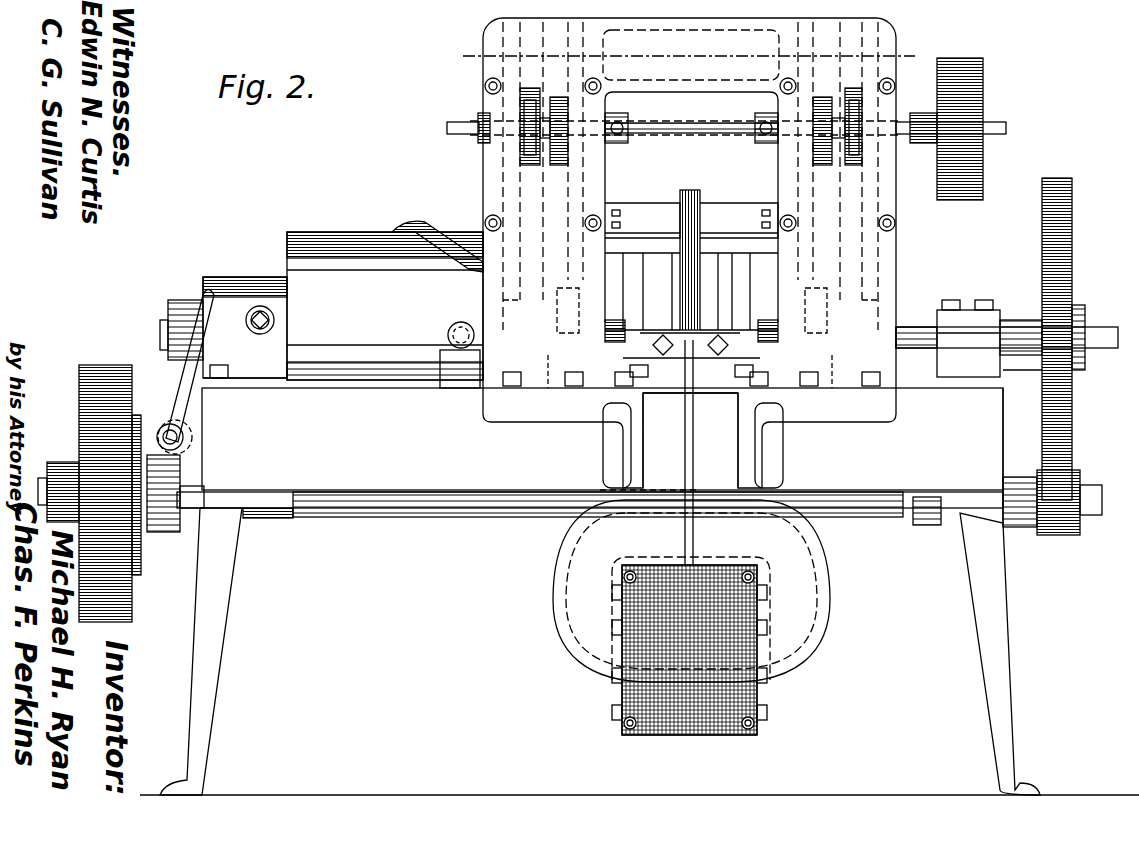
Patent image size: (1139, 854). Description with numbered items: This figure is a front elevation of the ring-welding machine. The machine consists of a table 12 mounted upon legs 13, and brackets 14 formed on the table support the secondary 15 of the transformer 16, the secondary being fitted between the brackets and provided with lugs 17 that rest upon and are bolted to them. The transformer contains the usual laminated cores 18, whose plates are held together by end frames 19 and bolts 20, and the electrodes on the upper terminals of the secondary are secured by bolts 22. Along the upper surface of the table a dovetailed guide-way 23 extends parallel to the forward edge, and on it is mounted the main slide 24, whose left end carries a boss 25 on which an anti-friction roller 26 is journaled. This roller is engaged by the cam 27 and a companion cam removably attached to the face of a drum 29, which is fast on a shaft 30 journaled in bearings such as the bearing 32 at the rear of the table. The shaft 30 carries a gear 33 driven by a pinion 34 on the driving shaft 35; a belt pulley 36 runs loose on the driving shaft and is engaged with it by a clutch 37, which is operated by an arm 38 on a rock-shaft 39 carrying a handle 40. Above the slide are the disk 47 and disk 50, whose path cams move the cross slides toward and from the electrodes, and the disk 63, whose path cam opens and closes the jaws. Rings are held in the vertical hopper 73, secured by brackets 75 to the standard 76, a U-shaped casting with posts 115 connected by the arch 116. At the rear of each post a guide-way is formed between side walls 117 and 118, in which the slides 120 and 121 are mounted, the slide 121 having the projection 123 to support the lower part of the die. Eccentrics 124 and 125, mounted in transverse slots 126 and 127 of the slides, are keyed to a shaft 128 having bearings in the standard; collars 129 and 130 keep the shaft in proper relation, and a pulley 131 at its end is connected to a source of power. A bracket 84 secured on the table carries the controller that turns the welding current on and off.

The table 12 is at (906, 476).
The legs 13 is at (480, 56).
The brackets 14 is at (608, 412).
The secondary 15 is at (690, 440).
The transformer 16 is at (707, 659).
The lugs 17 is at (627, 384).
The laminated cores 18 is at (700, 732).
The end frames 19 is at (620, 686).
The bolts 20 is at (612, 630).
The bolts 22 is at (663, 352).
The dovetailed guide-way 23 is at (362, 400).
The main slide 24 is at (460, 372).
The boss 25 is at (446, 346).
The anti-friction roller 26 is at (457, 328).
The cam 27 is at (410, 224).
The drum 29 is at (335, 246).
The shaft 30 is at (912, 326).
The bearing 32 is at (970, 322).
The gear 33 is at (1064, 282).
The pinion 34 is at (1060, 530).
The driving shaft 35 is at (439, 522).
The belt pulley 36 is at (131, 608).
The clutch 37 is at (165, 527).
The arm 38 is at (178, 520).
The rock-shaft 39 is at (167, 428).
The handle 40 is at (201, 295).
The disk 47 is at (634, 300).
The disk 50 is at (762, 292).
The disk 63 is at (716, 345).
The vertical hopper 73 is at (690, 196).
The brackets 75 is at (730, 214).
The standard 76 is at (532, 400).
The bracket 84 is at (248, 290).
The posts 115 is at (726, 183).
The arch 116 is at (688, 30).
The side wall 117 is at (488, 42).
The side wall 118 is at (598, 32).
The slide 120 is at (556, 36).
The slide 121 is at (528, 36).
The projection 123 is at (550, 396).
The eccentric 124 is at (526, 130).
The eccentric 125 is at (568, 136).
The transverse slot 126 is at (522, 150).
The transverse slot 127 is at (564, 158).
The shaft 128 is at (697, 131).
The collar 129 is at (624, 122).
The collar 130 is at (760, 120).
The pulley 131 is at (976, 102).